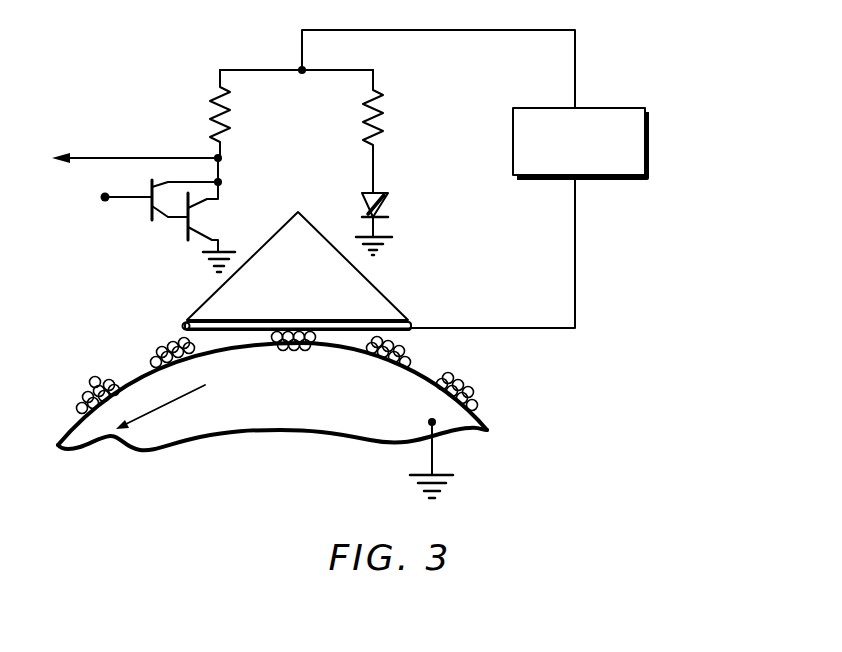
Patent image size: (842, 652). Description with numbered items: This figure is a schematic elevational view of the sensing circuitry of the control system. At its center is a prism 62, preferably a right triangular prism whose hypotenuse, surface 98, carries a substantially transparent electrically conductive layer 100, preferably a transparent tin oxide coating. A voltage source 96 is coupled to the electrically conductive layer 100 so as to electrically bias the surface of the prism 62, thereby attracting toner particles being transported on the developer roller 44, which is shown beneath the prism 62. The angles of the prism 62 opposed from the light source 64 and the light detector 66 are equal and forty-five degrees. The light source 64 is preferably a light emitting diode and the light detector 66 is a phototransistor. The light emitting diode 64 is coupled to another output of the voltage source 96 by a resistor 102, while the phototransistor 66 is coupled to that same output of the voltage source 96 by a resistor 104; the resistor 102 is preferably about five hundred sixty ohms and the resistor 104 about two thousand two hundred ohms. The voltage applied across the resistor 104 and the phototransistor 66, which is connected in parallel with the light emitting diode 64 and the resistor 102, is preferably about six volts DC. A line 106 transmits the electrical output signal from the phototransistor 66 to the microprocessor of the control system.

The developer roller 44 is at (203, 418).
The prism 62 is at (372, 282).
The light source 64 is at (388, 197).
The light detector 66 is at (152, 210).
The voltage source 96 is at (648, 117).
The surface 98 is at (185, 324).
The electrically conductive layer 100 is at (395, 333).
The resistor 102 is at (383, 123).
The resistor 104 is at (228, 128).
The line 106 is at (123, 153).